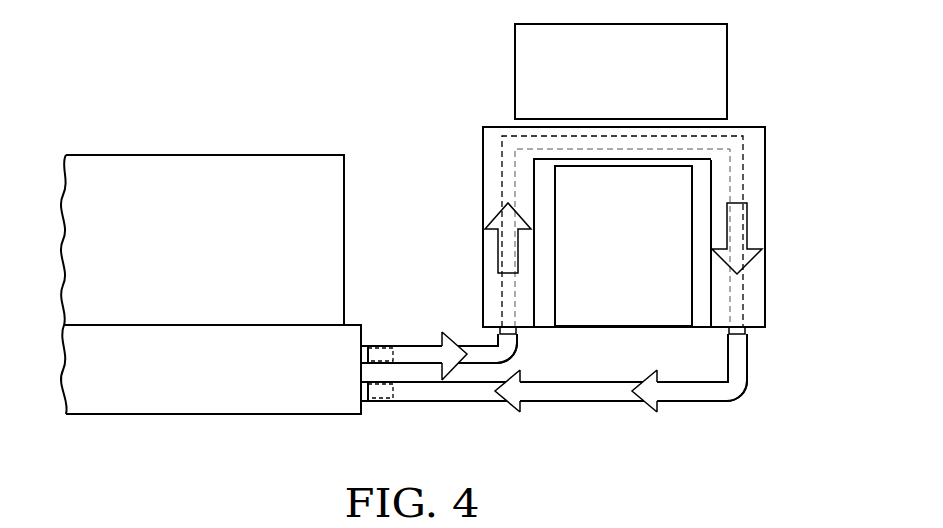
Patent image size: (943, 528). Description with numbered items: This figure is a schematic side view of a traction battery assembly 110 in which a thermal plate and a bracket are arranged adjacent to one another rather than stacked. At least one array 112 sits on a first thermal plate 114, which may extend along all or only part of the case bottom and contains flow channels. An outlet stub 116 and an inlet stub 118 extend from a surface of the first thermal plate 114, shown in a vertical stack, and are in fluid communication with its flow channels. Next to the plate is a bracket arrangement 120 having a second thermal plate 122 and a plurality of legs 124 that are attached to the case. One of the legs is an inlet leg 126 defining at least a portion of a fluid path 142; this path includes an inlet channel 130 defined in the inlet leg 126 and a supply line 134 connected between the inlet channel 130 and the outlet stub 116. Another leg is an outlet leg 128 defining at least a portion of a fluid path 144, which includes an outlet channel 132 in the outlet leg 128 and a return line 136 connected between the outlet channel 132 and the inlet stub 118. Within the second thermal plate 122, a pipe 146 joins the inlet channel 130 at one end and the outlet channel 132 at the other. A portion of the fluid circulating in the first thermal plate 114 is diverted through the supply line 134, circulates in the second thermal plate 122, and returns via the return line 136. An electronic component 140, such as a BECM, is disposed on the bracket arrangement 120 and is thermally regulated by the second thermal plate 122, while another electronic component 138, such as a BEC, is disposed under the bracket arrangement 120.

The traction battery assembly 110 is at (157, 74).
The array 112 is at (176, 251).
The first thermal plate 114 is at (180, 383).
The outlet stub 116 is at (377, 345).
The inlet stub 118 is at (378, 403).
The bracket arrangement 120 is at (764, 104).
The second thermal plate 122 is at (741, 127).
The legs 124 is at (765, 178).
The inlet leg 126 is at (490, 160).
The outlet leg 128 is at (765, 220).
The inlet channel 130 is at (498, 188).
The outlet channel 132 is at (747, 303).
The supply line 134 is at (518, 363).
The return line 136 is at (604, 396).
The electronic component 138 is at (607, 256).
The electronic component 140 is at (607, 88).
The fluid path 142 is at (473, 343).
The fluid path 144 is at (718, 402).
The pipe 146 is at (553, 136).